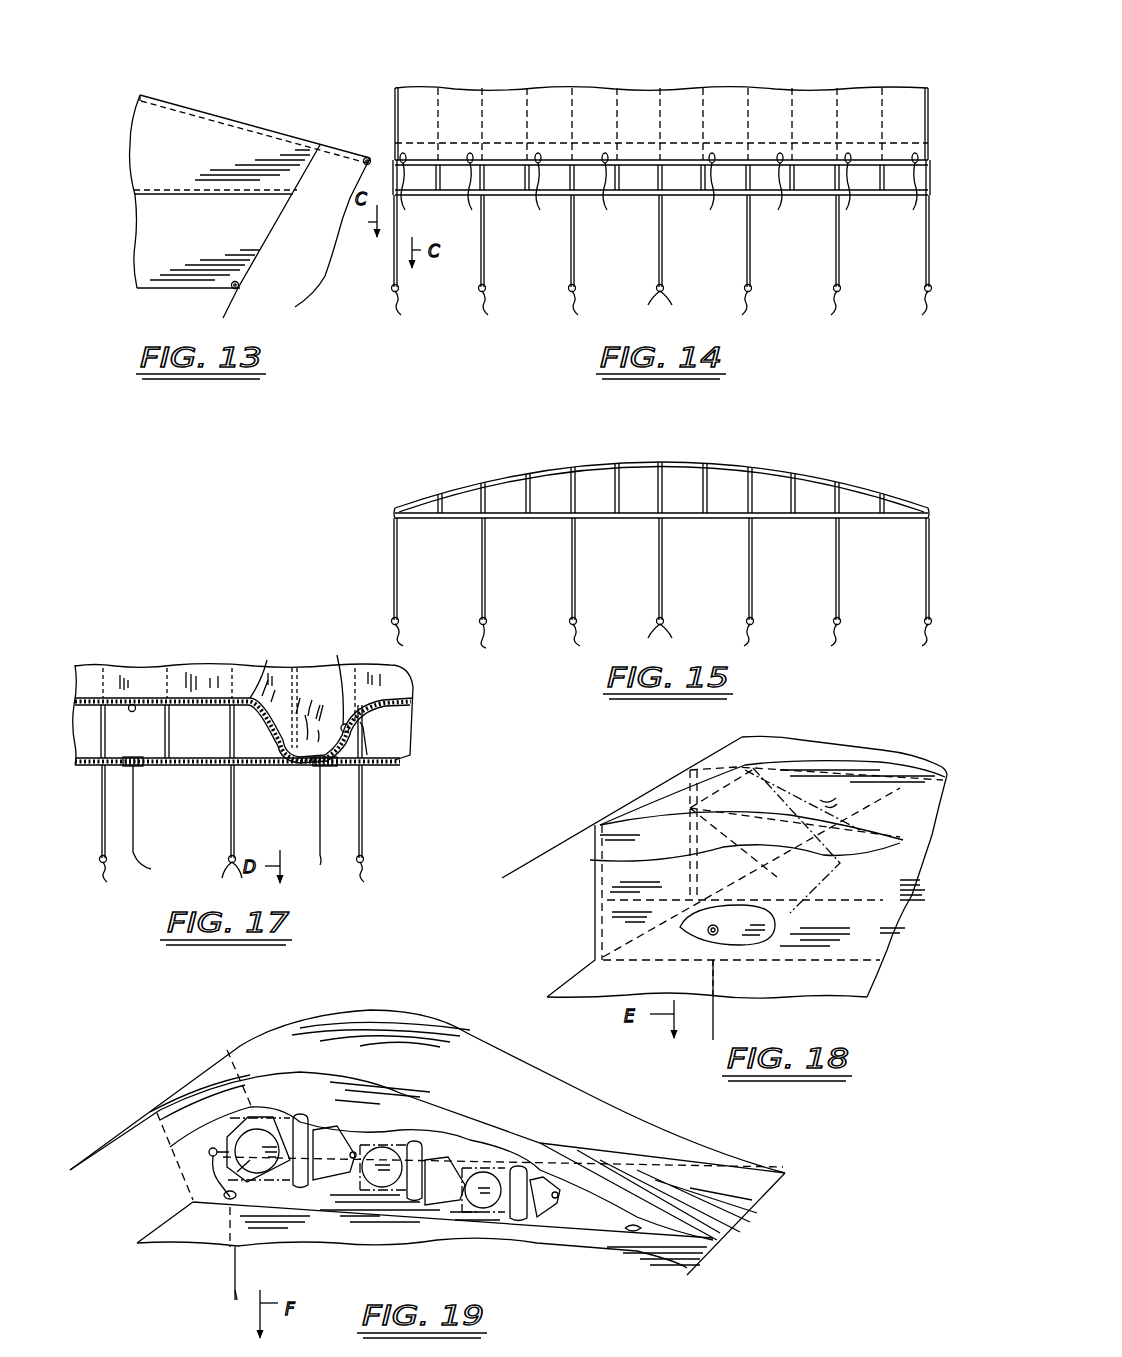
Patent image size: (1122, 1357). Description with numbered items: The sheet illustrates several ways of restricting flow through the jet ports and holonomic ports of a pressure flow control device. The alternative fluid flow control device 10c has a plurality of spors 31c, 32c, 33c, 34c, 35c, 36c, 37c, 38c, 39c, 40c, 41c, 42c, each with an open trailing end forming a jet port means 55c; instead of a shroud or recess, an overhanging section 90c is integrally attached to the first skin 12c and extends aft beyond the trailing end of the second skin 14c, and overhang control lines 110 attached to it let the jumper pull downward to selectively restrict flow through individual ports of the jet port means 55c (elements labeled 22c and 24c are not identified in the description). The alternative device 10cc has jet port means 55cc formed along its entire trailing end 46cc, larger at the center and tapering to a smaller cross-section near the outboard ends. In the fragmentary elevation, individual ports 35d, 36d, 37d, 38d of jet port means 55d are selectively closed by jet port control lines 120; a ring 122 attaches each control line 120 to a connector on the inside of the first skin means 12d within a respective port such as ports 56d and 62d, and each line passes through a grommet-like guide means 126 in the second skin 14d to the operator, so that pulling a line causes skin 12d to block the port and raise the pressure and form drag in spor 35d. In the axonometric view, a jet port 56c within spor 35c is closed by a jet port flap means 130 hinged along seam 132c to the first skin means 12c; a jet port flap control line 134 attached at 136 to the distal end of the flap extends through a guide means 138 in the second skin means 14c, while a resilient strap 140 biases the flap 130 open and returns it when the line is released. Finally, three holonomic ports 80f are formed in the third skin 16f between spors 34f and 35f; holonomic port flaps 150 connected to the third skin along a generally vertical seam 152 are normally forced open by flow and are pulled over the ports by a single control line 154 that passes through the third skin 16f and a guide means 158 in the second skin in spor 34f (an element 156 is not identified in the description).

In FIG. 13, the fluid flow control device 10c is at (197, 93).
In FIG. 14, the fluid flow control device 10c is at (655, 85).
In FIG. 13, the first skin 12c is at (255, 120).
In FIG. 14, the first skin 12c is at (688, 100).
In FIG. 18, the first skin 12c is at (660, 790).
In FIG. 13, the second skin 14c is at (226, 196).
In FIG. 14, the second skin 14c is at (730, 205).
In FIG. 18, the second skin 14c is at (905, 945).
In FIG. 13, the grommet 22c is at (237, 298).
In FIG. 13, the side panel 24c is at (137, 240).
In FIG. 14, the side panel 24c is at (932, 228).
In FIG. 14, the spor 31c is at (897, 100).
In FIG. 14, the spor 32c is at (855, 100).
In FIG. 14, the spor 33c is at (803, 103).
In FIG. 14, the spor 34c is at (770, 107).
In FIG. 14, the spor 35c is at (720, 100).
In FIG. 18, the spor 35c is at (614, 815).
In FIG. 14, the spor 36c is at (688, 105).
In FIG. 14, the spor 37c is at (632, 105).
In FIG. 14, the spor 38c is at (595, 103).
In FIG. 14, the spor 39c is at (545, 105).
In FIG. 14, the spor 40c is at (507, 103).
In FIG. 14, the spor 41c is at (455, 105).
In FIG. 13, the spor 42c is at (130, 154).
In FIG. 14, the spor 42c is at (418, 103).
In FIG. 13, the jet port means 55c is at (306, 172).
In FIG. 14, the jet port means 55c is at (645, 178).
In FIG. 13, the overhanging section 90c is at (366, 156).
In FIG. 14, the overhanging section 90c is at (893, 158).
In FIG. 13, the overhang control lines 110 is at (308, 285).
In FIG. 14, the overhang control lines 110 is at (540, 210).
In FIG. 15, the pressure flow control device 10cc is at (520, 466).
In FIG. 15, the trailing end 46cc is at (820, 472).
In FIG. 15, the jet port means 55cc is at (633, 500).
In FIG. 17, the first skin means 12d is at (405, 693).
In FIG. 17, the second skin 14d is at (388, 767).
In FIG. 17, the spor 35d is at (332, 745).
In FIG. 17, the jet port 36d is at (255, 692).
In FIG. 17, the jet port 37d is at (220, 768).
In FIG. 17, the jet port 38d is at (113, 766).
In FIG. 17, the jet port means 55d is at (203, 770).
In FIG. 17, the jet port 56d is at (345, 724).
In FIG. 17, the jet port 62d is at (115, 720).
In FIG. 17, the jet port control lines 120 is at (316, 812).
In FIG. 17, the ring 122 is at (136, 708).
In FIG. 17, the jet port control line guide means 126 is at (140, 760).
In FIG. 18, the jet port flap means 130 is at (860, 775).
In FIG. 18, the seam 132c is at (710, 775).
In FIG. 18, the jet port flap control line 134 is at (713, 1010).
In FIG. 18, the attachment point 136 is at (950, 777).
In FIG. 18, the guide means 138 is at (705, 940).
In FIG. 18, the resilient strap 140 is at (930, 832).
In FIG. 18, the jet port 56c is at (640, 905).
In FIG. 19, the third skin 16f is at (170, 1160).
In FIG. 19, the spor 34f is at (193, 1068).
In FIG. 19, the spor 35f is at (150, 1110).
In FIG. 19, the holonomic ports 80f is at (266, 1140).
In FIG. 19, the holonomic port flaps 150 is at (305, 1190).
In FIG. 19, the generally vertical seam 152 is at (308, 1118).
In FIG. 19, the holonomic port flap control line 154 is at (235, 1292).
In FIG. 19, the grommet 156 is at (212, 1158).
In FIG. 19, the guide means 158 is at (228, 1200).